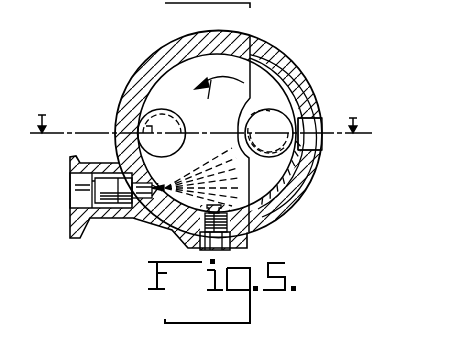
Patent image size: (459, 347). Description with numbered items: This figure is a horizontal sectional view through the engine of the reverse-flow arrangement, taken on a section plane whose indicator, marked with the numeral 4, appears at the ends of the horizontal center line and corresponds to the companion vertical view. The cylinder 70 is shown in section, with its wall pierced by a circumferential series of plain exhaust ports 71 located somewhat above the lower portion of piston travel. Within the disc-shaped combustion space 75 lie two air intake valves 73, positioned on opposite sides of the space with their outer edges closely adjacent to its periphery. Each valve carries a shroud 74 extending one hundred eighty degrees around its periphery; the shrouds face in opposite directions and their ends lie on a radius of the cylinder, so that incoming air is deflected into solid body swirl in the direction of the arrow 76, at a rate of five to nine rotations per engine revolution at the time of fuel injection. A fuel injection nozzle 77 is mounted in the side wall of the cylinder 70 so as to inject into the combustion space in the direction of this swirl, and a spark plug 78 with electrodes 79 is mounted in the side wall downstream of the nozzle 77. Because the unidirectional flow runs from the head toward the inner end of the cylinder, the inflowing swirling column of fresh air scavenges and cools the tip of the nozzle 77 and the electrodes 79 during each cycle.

The cylinder 70 is at (167, 50).
The exhaust ports 71 is at (281, 66).
The air intake valves 73 is at (157, 128).
The shroud 74 is at (149, 115).
The combustion space 75 is at (222, 156).
The arrow 76 is at (219, 100).
The fuel injection nozzle 77 is at (110, 192).
The spark plug 78 is at (215, 250).
The electrodes 79 is at (250, 226).
The section line 4- 4 is at (201, 140).